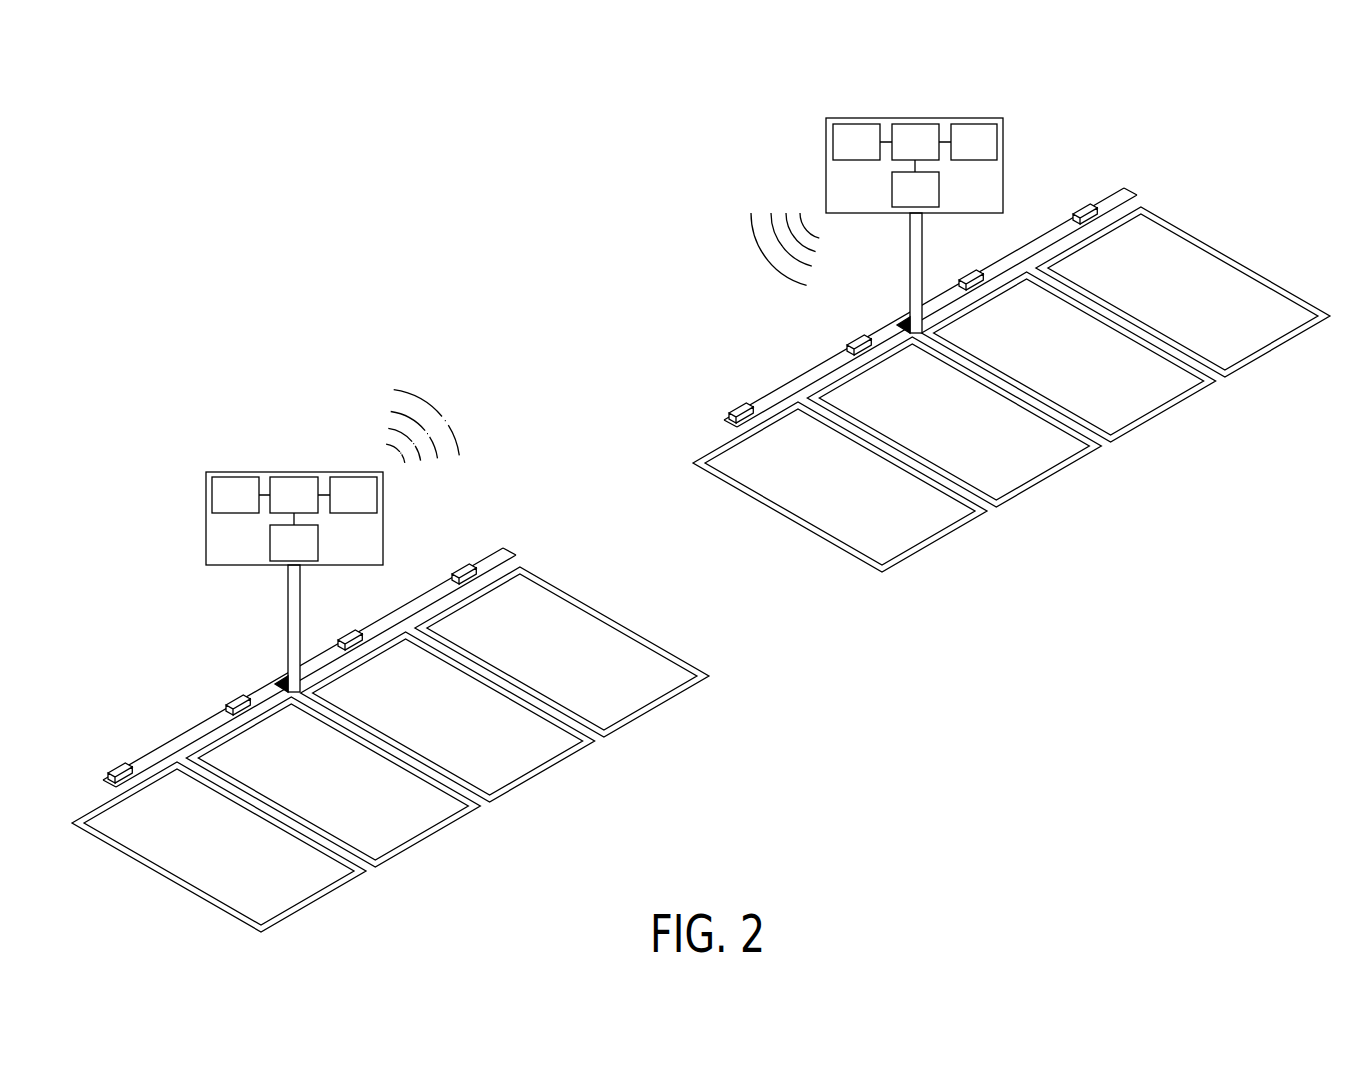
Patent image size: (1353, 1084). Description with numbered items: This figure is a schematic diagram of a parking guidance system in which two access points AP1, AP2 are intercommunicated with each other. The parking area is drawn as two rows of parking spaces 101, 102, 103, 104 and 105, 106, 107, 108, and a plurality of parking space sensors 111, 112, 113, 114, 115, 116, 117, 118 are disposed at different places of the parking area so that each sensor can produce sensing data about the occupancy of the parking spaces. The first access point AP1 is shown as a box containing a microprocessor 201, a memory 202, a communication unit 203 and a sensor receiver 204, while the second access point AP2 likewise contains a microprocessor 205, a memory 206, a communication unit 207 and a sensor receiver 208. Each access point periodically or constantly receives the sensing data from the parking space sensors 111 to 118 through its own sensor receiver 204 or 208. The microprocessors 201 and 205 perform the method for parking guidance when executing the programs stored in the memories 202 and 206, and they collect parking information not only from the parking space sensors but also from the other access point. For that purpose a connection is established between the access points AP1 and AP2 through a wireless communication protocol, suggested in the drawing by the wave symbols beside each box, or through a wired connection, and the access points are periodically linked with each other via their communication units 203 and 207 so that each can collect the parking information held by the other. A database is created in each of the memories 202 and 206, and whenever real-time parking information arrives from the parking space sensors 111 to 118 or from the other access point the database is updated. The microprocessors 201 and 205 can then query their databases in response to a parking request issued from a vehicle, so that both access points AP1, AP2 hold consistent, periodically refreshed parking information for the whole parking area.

The parking space 101 is at (303, 892).
The parking space 102 is at (420, 825).
The parking space 103 is at (535, 758).
The parking space 104 is at (650, 693).
The parking space 105 is at (841, 499).
The parking space 106 is at (955, 434).
The parking space 107 is at (1071, 368).
The parking space 108 is at (1185, 302).
The parking space sensor 111 is at (116, 778).
The parking space sensor 112 is at (232, 708).
The parking space sensor 113 is at (347, 645).
The parking space sensor 114 is at (462, 580).
The parking space sensor 115 is at (728, 393).
The parking space sensor 116 is at (846, 324).
The parking space sensor 117 is at (958, 259).
The parking space sensor 118 is at (1073, 194).
The microprocessor 201 is at (295, 477).
The memory 202 is at (236, 477).
The communication unit 203 is at (354, 477).
The sensor receiver 204 is at (270, 542).
The microprocessor 205 is at (916, 124).
The memory 206 is at (975, 124).
The communication unit 207 is at (858, 124).
The sensor receiver 208 is at (892, 188).
The access point AP1 is at (206, 500).
The access point AP2 is at (826, 142).